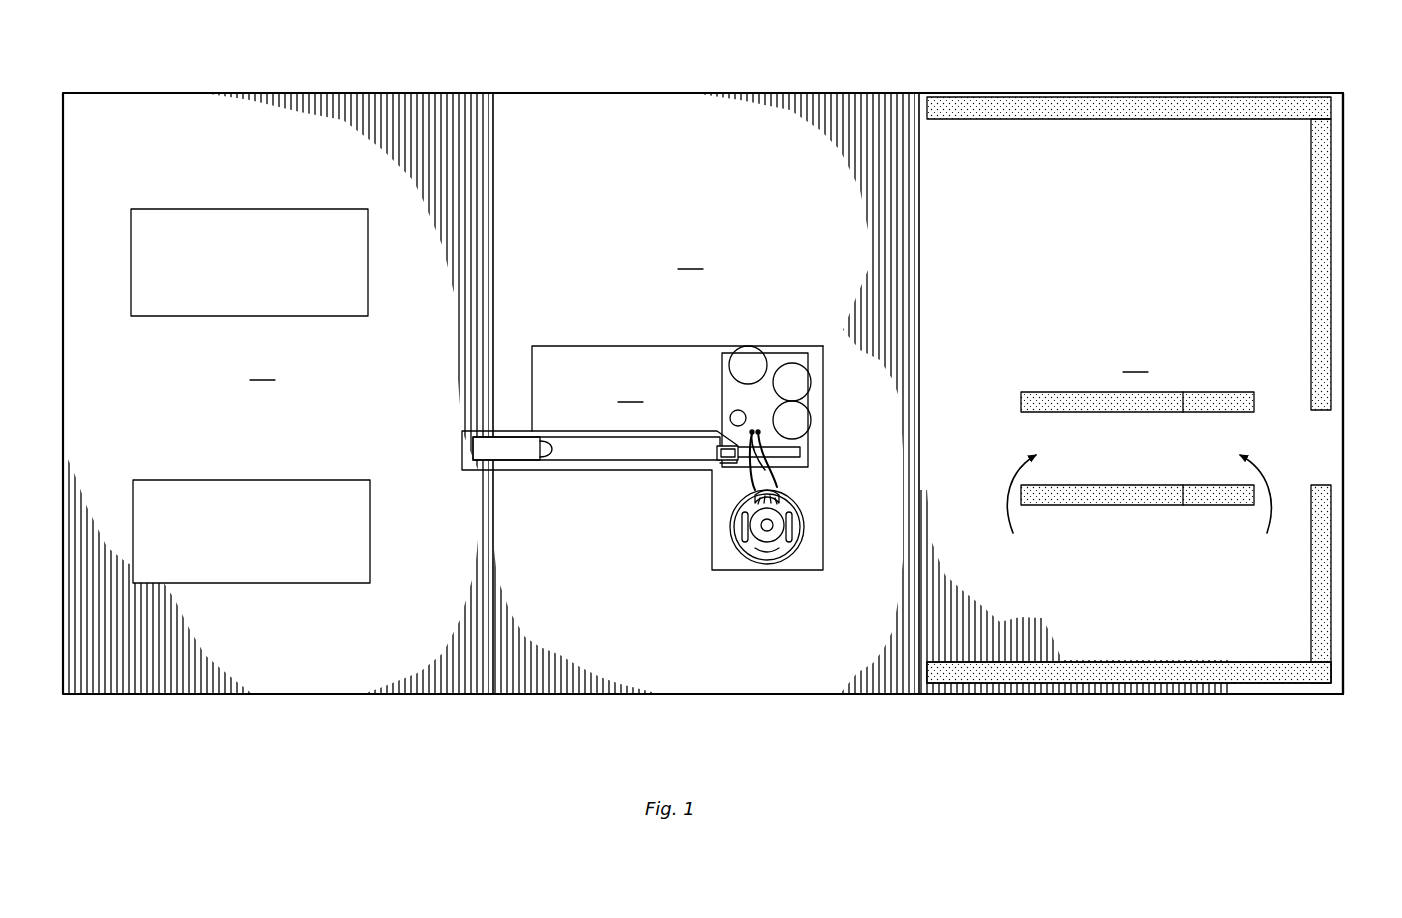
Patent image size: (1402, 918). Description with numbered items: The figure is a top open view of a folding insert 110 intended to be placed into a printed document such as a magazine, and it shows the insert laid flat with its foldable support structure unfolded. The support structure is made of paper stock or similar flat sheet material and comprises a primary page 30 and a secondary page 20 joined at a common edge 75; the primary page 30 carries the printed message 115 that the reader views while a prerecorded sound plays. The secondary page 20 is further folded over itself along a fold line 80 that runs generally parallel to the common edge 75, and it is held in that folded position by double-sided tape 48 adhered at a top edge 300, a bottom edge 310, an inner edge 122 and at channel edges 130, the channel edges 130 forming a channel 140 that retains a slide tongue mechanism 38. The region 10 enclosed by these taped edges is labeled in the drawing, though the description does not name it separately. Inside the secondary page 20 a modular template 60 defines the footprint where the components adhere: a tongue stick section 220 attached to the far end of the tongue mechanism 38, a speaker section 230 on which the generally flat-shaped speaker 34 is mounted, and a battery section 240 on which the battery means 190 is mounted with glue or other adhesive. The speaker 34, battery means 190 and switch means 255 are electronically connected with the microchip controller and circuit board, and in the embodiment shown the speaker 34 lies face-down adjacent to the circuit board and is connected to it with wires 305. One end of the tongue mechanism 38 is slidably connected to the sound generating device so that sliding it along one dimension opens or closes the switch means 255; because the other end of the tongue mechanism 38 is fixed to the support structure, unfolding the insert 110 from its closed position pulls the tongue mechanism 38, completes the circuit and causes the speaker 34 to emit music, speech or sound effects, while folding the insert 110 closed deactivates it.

The folding insert 110 is at (1242, 62).
The primary page 30 is at (262, 369).
The printed message 115 is at (247, 209).
The common edge 75 is at (493, 694).
The fold line 80 is at (919, 694).
The secondary page 20 is at (690, 258).
The modular template 60 is at (677, 388).
The battery means 190 is at (800, 332).
The battery section 240 is at (815, 395).
The tongue stick section 220 is at (468, 446).
The slide tongue mechanism 38 is at (572, 457).
The switch means 255 is at (710, 457).
The speaker section 230 is at (817, 560).
The speaker 34 is at (767, 531).
The wires 305 is at (775, 477).
The top edge 300 is at (973, 93).
The double-sided tape 48 is at (1090, 97).
The inner edge 122 is at (1333, 335).
The bottom edge 310 is at (1097, 694).
The process zone 10 is at (1135, 361).
The channel edges 130 is at (1133, 413).
The channel 140 is at (1139, 505).